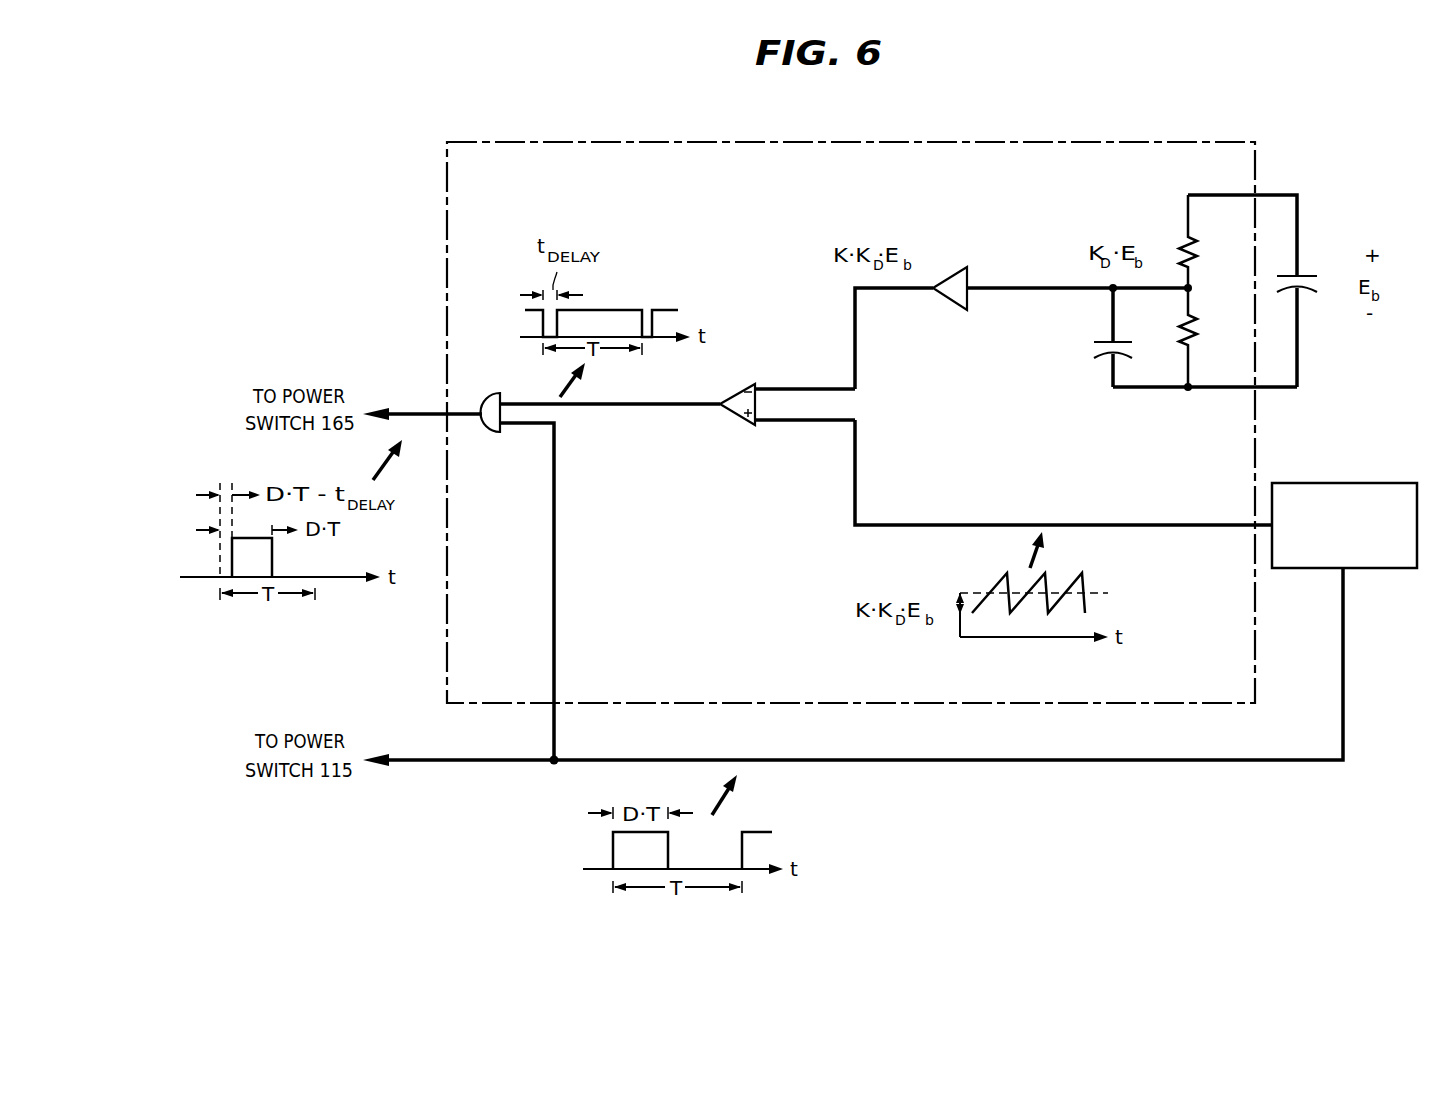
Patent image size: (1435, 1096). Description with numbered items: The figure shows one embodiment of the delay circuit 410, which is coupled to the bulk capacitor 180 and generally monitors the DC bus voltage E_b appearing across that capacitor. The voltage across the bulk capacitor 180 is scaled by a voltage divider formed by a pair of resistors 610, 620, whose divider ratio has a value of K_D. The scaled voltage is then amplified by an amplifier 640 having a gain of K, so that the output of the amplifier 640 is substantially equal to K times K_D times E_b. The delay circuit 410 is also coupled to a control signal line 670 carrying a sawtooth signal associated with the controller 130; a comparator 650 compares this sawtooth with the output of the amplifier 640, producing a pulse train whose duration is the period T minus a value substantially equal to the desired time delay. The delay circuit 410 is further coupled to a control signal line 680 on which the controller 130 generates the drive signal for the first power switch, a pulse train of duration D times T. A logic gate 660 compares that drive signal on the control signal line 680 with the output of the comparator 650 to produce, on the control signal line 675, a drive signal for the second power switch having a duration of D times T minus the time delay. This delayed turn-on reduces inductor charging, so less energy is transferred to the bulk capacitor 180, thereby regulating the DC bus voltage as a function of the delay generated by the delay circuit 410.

The delay circuit 410 is at (505, 187).
The control signal line 675 is at (406, 411).
The logic gate 660 is at (486, 398).
The comparator 650 is at (746, 424).
The amplifier 640 is at (960, 268).
The resistor 610 is at (1182, 246).
The resistor 620 is at (1196, 332).
The bulk capacitor 180 is at (1302, 275).
The controller 130 is at (1368, 482).
The control signal line 670 is at (1110, 523).
The control signal line 680 is at (1080, 758).